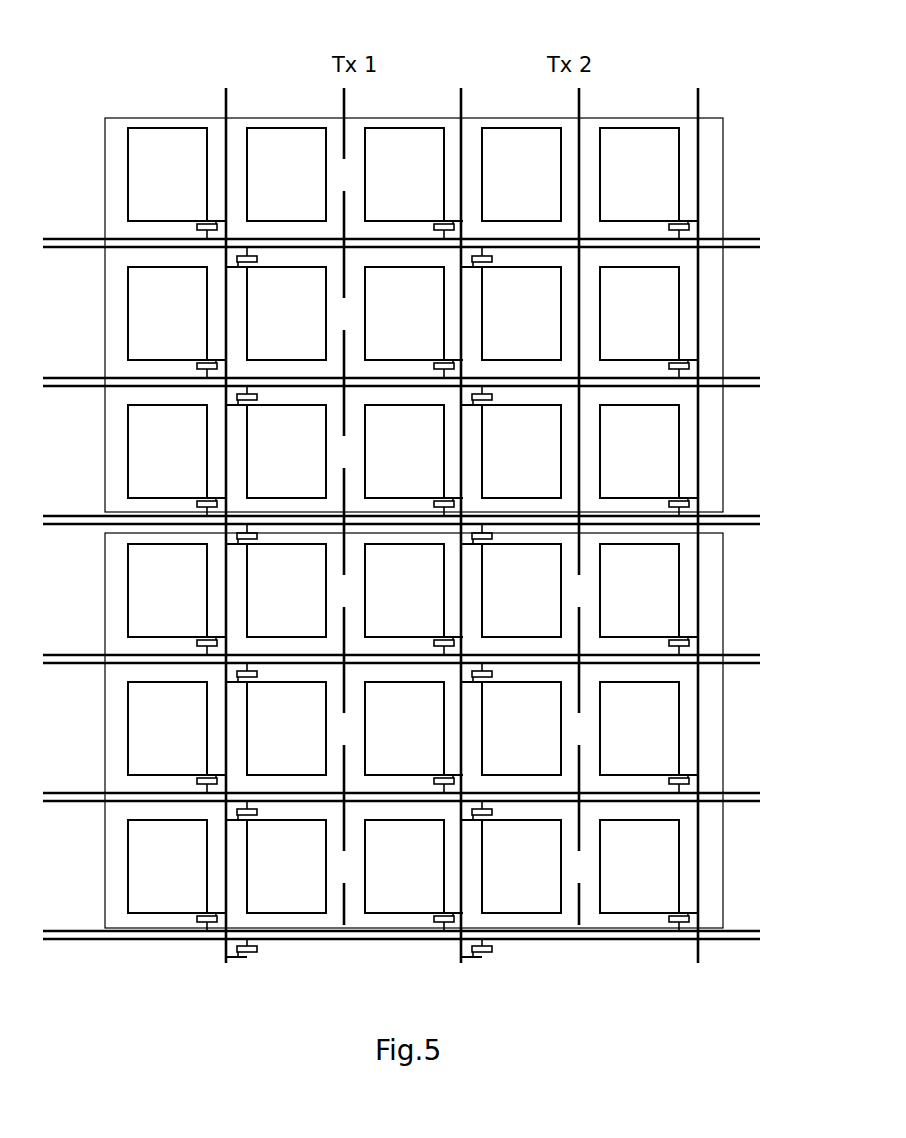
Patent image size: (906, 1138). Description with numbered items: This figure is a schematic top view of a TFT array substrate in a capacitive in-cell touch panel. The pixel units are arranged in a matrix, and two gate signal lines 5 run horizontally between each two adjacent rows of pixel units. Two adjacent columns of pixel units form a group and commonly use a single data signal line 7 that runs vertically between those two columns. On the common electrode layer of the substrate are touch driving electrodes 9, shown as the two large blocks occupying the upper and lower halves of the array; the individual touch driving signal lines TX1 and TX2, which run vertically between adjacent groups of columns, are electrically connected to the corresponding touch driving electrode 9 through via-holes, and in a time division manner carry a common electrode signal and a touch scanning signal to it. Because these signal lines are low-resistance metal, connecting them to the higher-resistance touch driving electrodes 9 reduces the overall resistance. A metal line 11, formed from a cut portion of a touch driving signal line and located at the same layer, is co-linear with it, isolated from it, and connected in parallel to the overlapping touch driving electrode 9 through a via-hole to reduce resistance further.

The gate signal line 5 is at (430, 545).
The data signal line 7 is at (267, 481).
The touch driving electrode 9 is at (457, 523).
The metal line 11 is at (401, 971).